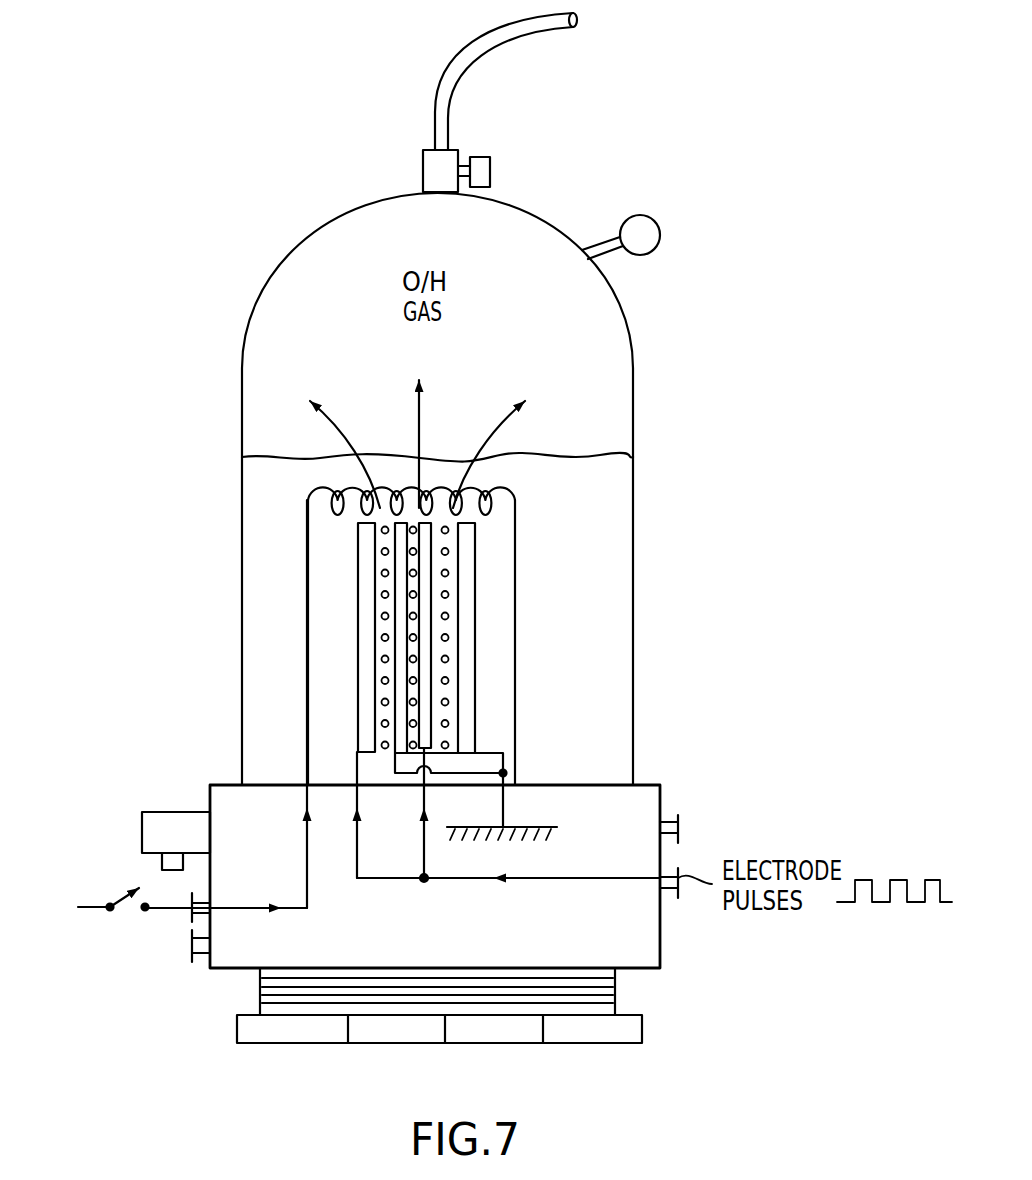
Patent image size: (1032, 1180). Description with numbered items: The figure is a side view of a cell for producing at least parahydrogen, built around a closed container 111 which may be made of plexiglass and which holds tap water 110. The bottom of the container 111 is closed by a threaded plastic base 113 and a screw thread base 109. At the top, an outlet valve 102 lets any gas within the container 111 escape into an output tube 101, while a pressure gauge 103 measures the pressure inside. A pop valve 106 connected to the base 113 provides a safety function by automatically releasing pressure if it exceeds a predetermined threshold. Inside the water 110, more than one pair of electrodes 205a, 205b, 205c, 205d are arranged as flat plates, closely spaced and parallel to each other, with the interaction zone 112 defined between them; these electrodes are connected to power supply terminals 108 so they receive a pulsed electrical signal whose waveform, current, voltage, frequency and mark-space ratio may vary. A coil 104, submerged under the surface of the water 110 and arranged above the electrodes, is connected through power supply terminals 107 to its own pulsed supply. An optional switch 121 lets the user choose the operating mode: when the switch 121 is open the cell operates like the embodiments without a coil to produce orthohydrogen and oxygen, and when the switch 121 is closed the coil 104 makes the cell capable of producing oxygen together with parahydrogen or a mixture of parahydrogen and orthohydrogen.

The output tube 101 is at (463, 72).
The outlet valve 102 is at (492, 168).
The pressure gauge 103 is at (662, 243).
The coil 104 is at (308, 500).
The pop valve 106 is at (162, 812).
The power supply terminals 107 is at (170, 935).
The power supply terminals 108 is at (697, 832).
The screw thread base 109 is at (648, 991).
The tap water 110 is at (600, 493).
The closed container 111 is at (633, 362).
The interaction zone 112 is at (490, 740).
The threaded plastic base 113 is at (660, 940).
The switch 121 is at (128, 910).
The electrode 205a is at (358, 592).
The electrode 205b is at (358, 680).
The electrode 205c is at (431, 607).
The electrode 205d is at (475, 658).